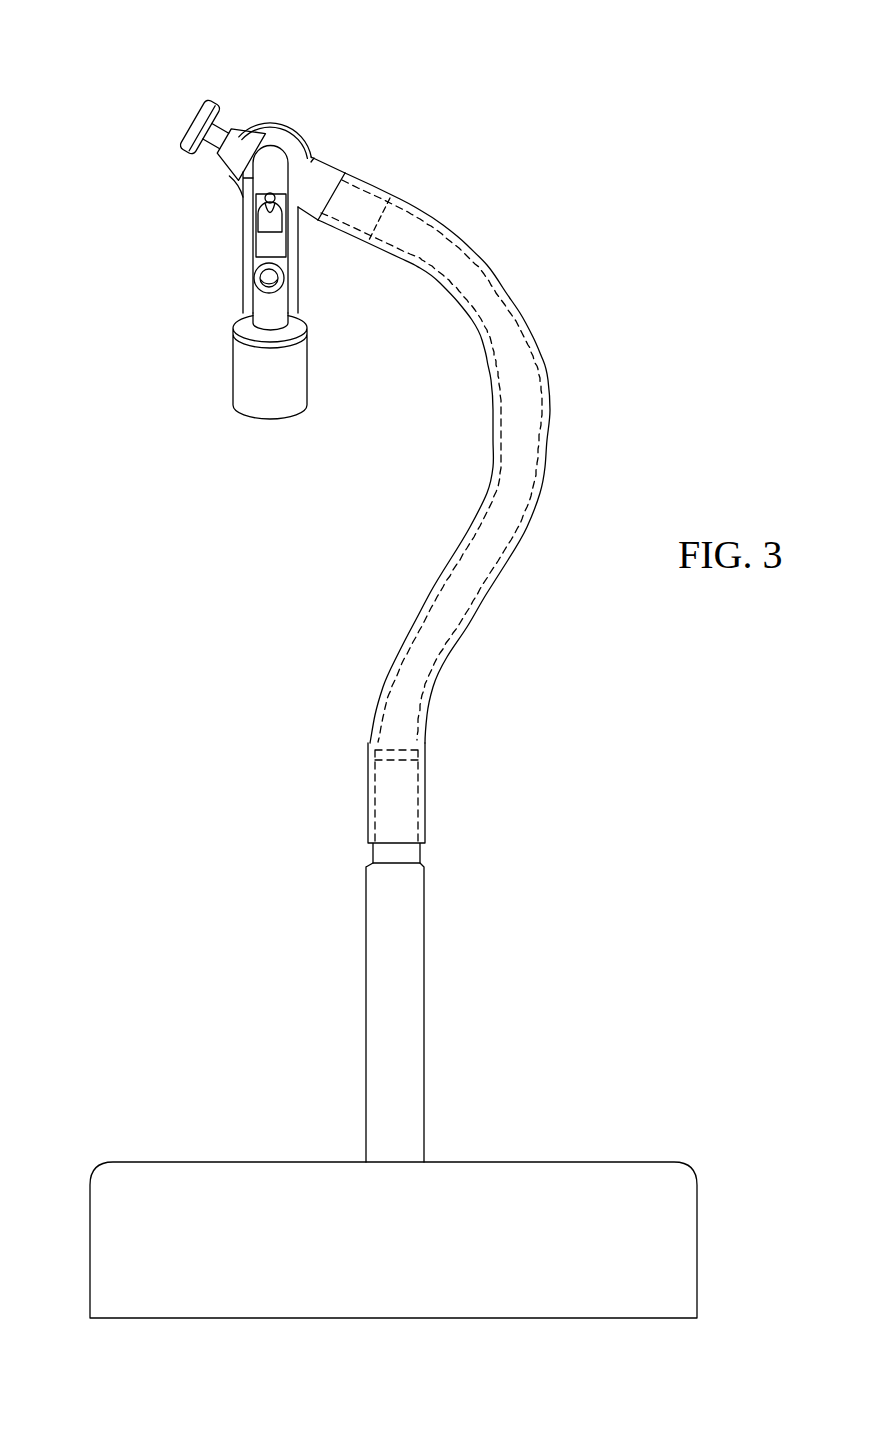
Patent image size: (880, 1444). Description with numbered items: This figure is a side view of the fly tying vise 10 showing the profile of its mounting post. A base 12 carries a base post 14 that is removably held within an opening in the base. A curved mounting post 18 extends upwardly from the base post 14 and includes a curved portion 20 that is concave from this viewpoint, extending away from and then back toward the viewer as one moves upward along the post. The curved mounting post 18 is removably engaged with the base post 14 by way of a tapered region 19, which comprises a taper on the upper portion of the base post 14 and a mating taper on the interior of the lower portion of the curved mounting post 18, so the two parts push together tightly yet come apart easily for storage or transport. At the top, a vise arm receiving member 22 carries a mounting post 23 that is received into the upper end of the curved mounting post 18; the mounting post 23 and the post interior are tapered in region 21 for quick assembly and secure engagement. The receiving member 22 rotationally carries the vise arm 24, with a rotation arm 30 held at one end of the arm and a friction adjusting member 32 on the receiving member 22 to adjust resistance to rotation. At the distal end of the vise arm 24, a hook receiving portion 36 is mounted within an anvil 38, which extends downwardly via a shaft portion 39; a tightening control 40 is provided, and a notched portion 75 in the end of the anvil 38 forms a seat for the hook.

The fly tying vise 10 is at (138, 961).
The base 12 is at (610, 1185).
The base post 14 is at (413, 1042).
The curved mounting post 18 is at (428, 697).
The tapered region 19 is at (445, 752).
The curved portion 20 is at (532, 580).
The tapered region 21 is at (392, 183).
The vise arm receiving member 22 is at (262, 137).
The mounting post 23 is at (336, 178).
The vise arm 24 is at (317, 118).
The rotation arm 30 is at (242, 282).
The friction adjusting member 32 is at (182, 132).
The hook receiving portion 36 is at (314, 158).
The anvil 38 is at (287, 215).
The shaft portion 39 is at (278, 306).
The tightening control 40 is at (263, 394).
The notched portion 75 is at (262, 212).